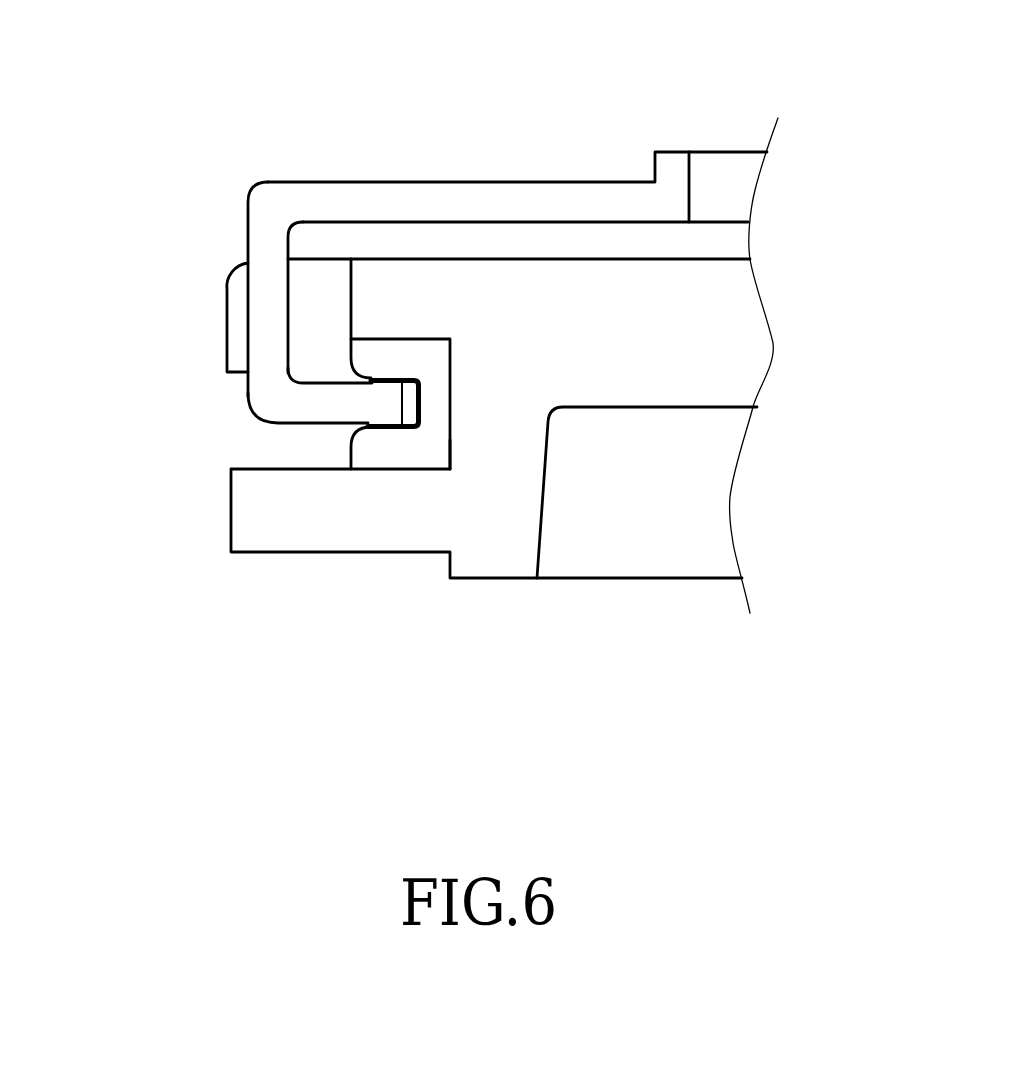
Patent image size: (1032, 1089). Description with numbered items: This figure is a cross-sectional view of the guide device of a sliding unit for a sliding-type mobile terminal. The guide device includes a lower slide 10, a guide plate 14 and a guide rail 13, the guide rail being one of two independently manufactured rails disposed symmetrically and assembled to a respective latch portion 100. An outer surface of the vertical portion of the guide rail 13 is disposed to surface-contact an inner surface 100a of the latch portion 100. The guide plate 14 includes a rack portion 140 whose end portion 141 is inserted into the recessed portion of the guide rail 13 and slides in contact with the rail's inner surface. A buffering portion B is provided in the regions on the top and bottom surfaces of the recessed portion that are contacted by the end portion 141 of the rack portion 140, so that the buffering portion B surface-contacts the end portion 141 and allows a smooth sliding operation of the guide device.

The lower slide 10 is at (215, 443).
The guide rail 13 is at (435, 350).
The guide plate 14 is at (600, 180).
The latch portion 100 is at (413, 470).
The inner surface of latch portion 100a is at (450, 450).
The rack portion 140 is at (263, 330).
The end portion of rack portion 141 is at (390, 410).
The buffering portion B is at (392, 378).